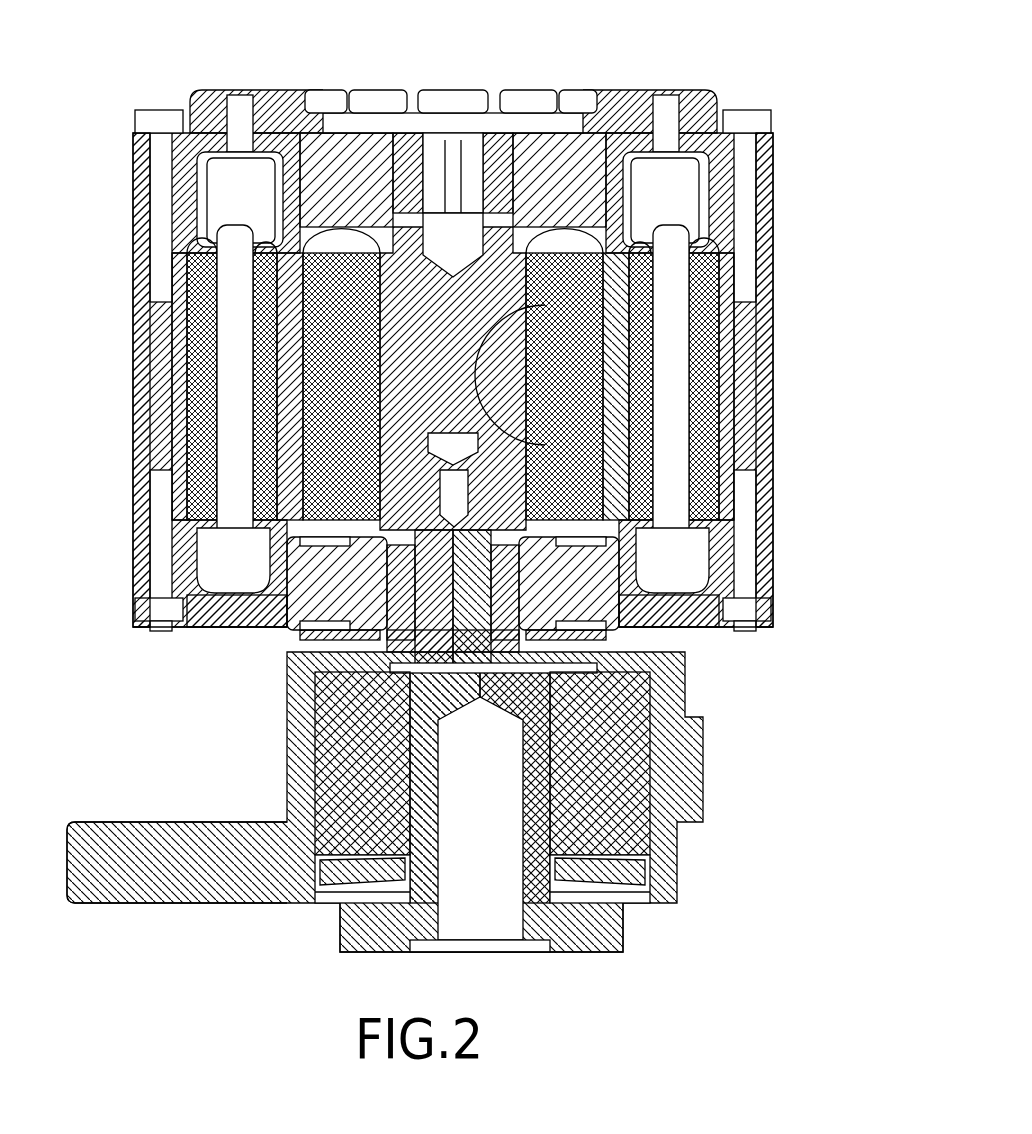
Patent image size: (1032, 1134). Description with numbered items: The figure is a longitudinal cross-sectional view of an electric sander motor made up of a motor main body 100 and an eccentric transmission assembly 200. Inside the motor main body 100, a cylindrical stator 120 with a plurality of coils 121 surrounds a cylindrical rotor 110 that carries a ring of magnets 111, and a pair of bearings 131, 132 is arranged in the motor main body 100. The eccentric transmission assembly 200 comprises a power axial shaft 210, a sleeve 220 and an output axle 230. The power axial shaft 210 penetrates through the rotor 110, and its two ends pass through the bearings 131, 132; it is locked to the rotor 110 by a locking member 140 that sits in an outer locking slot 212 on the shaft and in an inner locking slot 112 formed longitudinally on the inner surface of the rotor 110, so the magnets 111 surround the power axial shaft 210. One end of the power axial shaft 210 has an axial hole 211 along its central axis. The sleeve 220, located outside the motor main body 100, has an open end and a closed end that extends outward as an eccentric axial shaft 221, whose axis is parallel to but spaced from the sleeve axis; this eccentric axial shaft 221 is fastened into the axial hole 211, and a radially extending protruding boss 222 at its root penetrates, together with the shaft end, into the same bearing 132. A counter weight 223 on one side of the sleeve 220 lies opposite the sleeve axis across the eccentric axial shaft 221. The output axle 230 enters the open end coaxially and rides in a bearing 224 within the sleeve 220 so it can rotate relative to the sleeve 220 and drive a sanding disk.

The motor main body 100 is at (812, 224).
The rotor 110 is at (328, 232).
The magnets 111 is at (270, 385).
The inner locking slot 112 is at (725, 277).
The stator 120 is at (192, 343).
The coils 121 is at (230, 288).
The bearing 131 is at (350, 170).
The bearing 132 is at (317, 590).
The locking member 140 is at (690, 378).
The eccentric transmission assembly 200 is at (712, 862).
The power axial shaft 210 is at (705, 333).
The axial hole 211 is at (445, 452).
The outer locking slot 212 is at (660, 425).
The sleeve 220 is at (722, 768).
The eccentric axial shaft 221 is at (420, 518).
The protruding boss 222 is at (540, 592).
The counter weight 223 is at (132, 840).
The bearing 224 is at (603, 740).
The output axle 230 is at (570, 975).